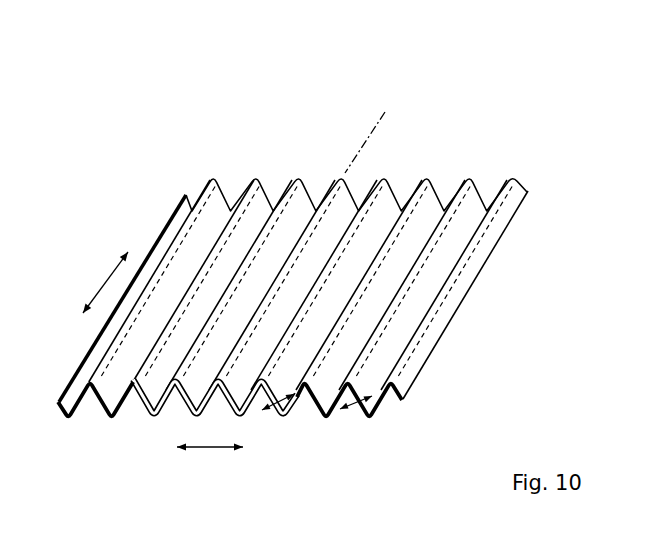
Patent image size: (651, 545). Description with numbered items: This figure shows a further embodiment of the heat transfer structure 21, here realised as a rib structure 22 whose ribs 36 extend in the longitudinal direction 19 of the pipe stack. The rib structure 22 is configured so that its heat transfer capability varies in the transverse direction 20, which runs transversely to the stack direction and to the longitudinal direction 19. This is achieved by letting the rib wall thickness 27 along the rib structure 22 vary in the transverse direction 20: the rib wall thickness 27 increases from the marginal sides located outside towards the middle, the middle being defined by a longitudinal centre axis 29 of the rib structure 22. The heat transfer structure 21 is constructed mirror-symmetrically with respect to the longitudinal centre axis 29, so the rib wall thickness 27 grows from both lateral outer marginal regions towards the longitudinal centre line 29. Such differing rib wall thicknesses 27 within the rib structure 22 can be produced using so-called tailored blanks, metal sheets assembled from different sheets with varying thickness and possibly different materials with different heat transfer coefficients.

The longitudinal direction 19 is at (104, 282).
The transverse direction 20 is at (205, 449).
The heat transfer structure 21 is at (422, 124).
The rib structure 22 is at (307, 298).
The rib wall thickness 27 is at (267, 412).
The longitudinal centre axis 29 is at (360, 150).
The ribs 36 is at (84, 408).